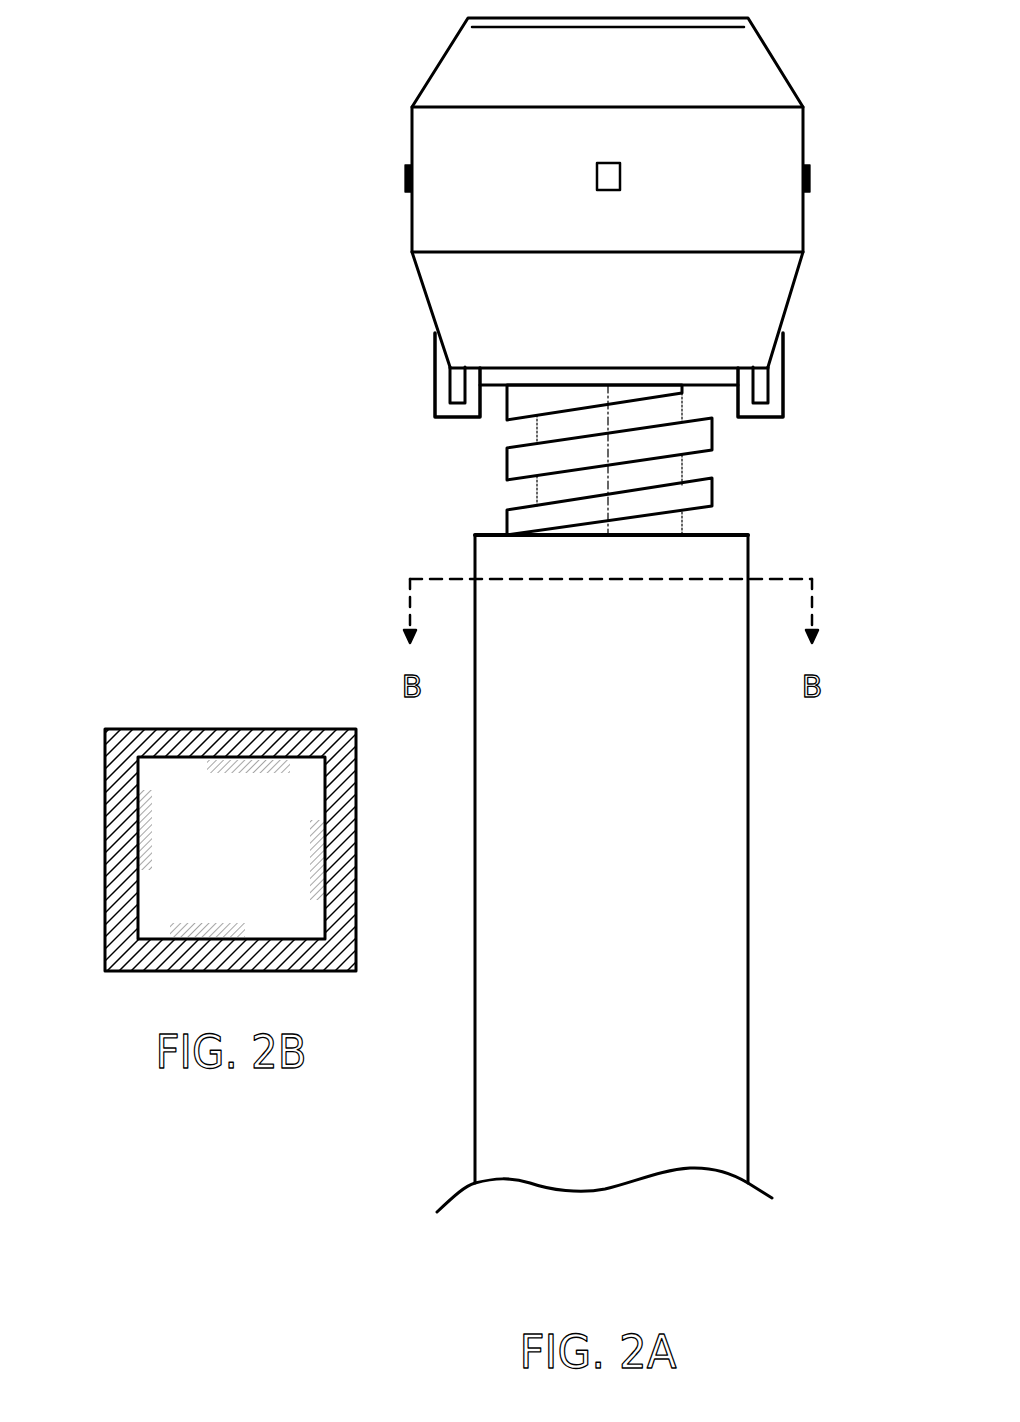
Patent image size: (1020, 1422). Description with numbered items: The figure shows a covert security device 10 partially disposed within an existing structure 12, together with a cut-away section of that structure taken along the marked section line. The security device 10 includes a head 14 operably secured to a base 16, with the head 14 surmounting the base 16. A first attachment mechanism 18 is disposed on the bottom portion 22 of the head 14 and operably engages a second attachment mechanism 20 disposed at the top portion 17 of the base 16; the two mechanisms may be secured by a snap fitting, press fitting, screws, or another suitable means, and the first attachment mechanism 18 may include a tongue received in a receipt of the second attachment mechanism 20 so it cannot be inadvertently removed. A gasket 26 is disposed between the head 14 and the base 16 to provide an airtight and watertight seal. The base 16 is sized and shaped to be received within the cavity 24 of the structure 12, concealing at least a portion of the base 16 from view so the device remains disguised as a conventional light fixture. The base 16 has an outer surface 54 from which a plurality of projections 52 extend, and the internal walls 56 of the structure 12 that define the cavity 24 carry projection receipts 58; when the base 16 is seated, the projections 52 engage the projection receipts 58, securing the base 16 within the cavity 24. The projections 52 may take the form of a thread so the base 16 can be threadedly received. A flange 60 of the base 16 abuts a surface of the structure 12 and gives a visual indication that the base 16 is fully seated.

In FIG. 2A, the security device 10 is at (275, 117).
In FIG. 2A, the structure 12 is at (604, 873).
In FIG. 2B, the structure 12 is at (130, 729).
In FIG. 2A, the head 14 is at (803, 107).
In FIG. 2A, the base 16 is at (609, 460).
In FIG. 2A, the top portion 17 is at (483, 440).
In FIG. 2A, the first attachment mechanism 18 is at (430, 389).
In FIG. 2A, the second attachment mechanism 20 is at (484, 418).
In FIG. 2A, the bottom portion 22 is at (803, 352).
In FIG. 2B, the cavity 24 is at (231, 848).
In FIG. 2A, the gasket 26 is at (562, 368).
In FIG. 2A, the projections 52 is at (713, 490).
In FIG. 2A, the outer surface 54 is at (537, 488).
In FIG. 2B, the internal walls 56 is at (135, 900).
In FIG. 2B, the projection receipts 58 is at (322, 895).
In FIG. 2A, the flange 60 is at (728, 393).